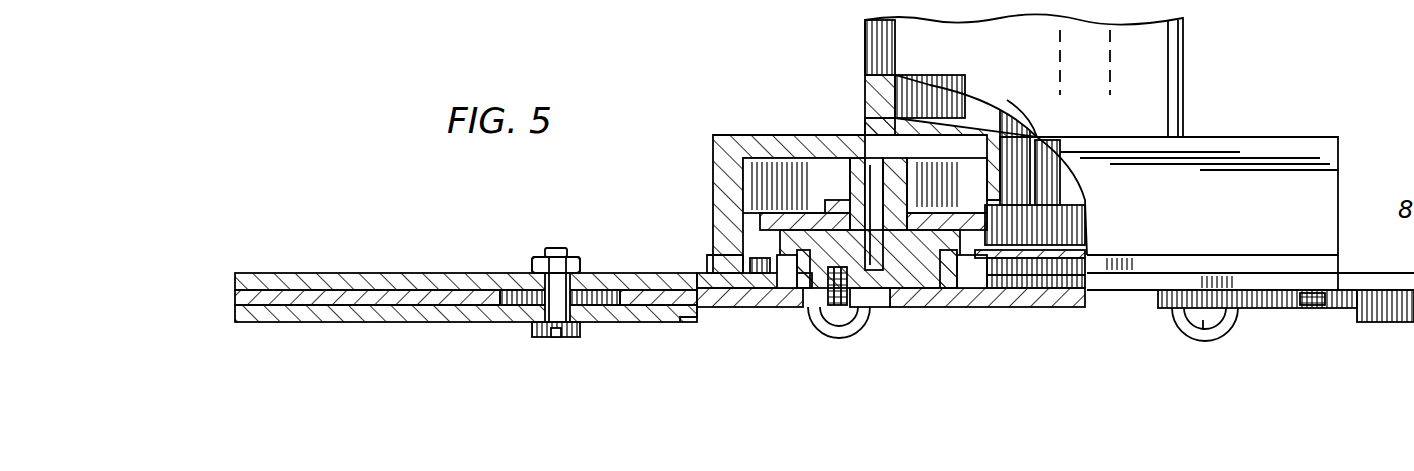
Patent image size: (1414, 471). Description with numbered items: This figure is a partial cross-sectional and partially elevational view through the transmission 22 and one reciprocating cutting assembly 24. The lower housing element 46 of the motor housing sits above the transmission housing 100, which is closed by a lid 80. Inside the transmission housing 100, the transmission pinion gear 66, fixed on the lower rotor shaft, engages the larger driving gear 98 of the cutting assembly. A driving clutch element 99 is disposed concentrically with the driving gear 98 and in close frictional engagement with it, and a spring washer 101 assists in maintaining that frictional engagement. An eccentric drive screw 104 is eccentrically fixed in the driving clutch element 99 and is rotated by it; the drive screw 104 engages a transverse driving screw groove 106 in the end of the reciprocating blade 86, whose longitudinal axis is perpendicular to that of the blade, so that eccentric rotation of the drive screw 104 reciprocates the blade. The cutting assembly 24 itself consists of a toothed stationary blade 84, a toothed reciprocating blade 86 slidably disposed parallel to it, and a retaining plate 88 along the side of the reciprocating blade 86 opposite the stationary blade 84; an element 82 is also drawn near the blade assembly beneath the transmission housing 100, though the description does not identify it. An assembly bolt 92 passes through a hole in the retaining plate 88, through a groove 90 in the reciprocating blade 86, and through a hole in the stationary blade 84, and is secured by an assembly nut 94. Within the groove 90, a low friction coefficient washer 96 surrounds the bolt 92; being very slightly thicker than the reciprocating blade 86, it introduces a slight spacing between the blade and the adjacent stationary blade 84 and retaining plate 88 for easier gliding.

The transmission 22 is at (1307, 130).
The reciprocating cutting assembly 24 is at (434, 262).
The lower housing element 46 is at (1175, 72).
The transmission pinion gear 66 is at (1005, 290).
The lid 80 is at (1318, 285).
The clamp member 82 is at (737, 265).
The stationary blade 84 is at (650, 285).
The reciprocating blade 86 is at (648, 290).
The retaining plate 88 is at (728, 300).
The groove 90 is at (492, 292).
The assembly bolt 92 is at (532, 330).
The assembly nut 94 is at (580, 265).
The low friction coefficient washer 96 is at (527, 295).
The driving gear 98 is at (760, 222).
The driving clutch element 99 is at (908, 298).
The transmission housing 100 is at (713, 165).
The spring washer 101 is at (835, 207).
The eccentric drive screw 104 is at (852, 318).
The transverse driving screw groove 106 is at (805, 290).